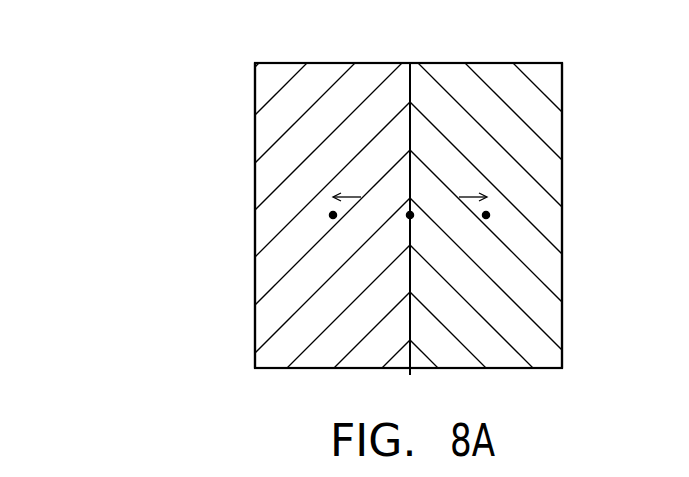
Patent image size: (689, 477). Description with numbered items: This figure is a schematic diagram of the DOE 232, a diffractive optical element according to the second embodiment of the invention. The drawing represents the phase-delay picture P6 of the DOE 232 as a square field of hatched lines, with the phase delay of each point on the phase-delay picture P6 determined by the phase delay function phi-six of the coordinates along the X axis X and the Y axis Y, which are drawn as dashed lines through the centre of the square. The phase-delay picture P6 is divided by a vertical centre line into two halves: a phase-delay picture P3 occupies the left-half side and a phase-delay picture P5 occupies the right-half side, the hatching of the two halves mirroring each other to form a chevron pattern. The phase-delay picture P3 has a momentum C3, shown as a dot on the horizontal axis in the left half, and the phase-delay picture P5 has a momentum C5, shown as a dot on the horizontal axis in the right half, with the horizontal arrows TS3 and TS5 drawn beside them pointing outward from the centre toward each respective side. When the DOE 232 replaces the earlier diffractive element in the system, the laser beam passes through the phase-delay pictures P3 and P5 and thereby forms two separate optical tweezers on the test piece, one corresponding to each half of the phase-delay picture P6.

The DOE 232 is at (83, 104).
The phase-delay picture P3 is at (255, 143).
The phase-delay picture P5 is at (562, 142).
The phase-delay picture P6 is at (562, 295).
The momentum C3 is at (333, 214).
The momentum C5 is at (486, 214).
The third touch shift TS3 is at (360, 181).
The fifth touch shift TS5 is at (463, 181).
The X axis X is at (217, 215).
The Y axis Y is at (410, 412).